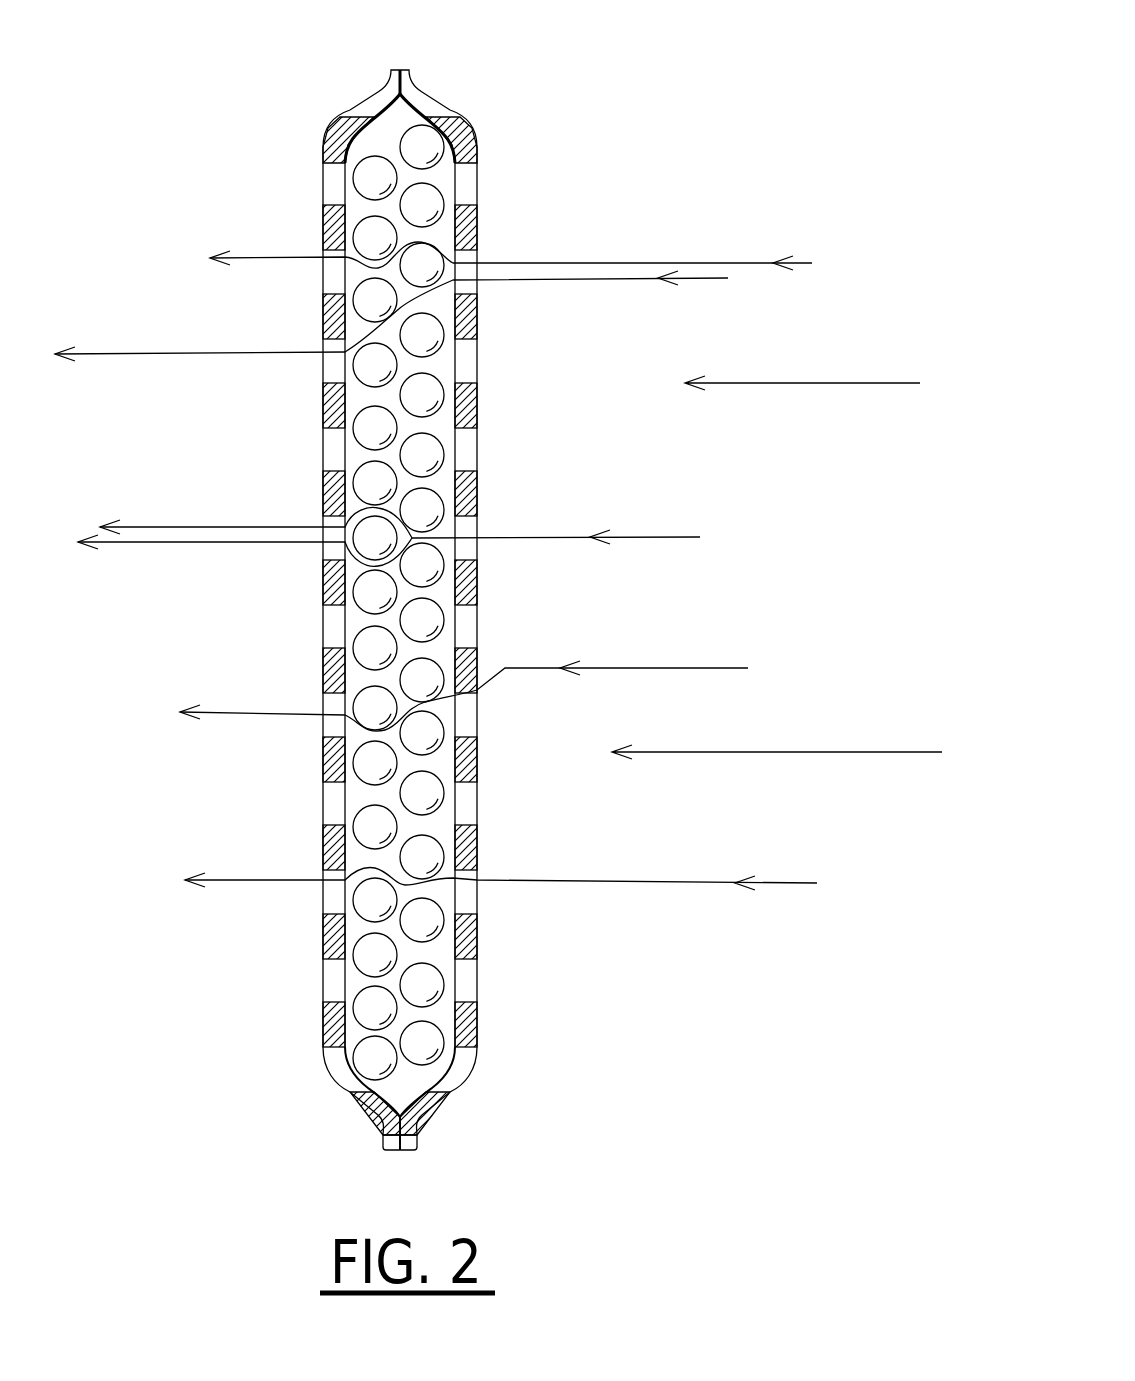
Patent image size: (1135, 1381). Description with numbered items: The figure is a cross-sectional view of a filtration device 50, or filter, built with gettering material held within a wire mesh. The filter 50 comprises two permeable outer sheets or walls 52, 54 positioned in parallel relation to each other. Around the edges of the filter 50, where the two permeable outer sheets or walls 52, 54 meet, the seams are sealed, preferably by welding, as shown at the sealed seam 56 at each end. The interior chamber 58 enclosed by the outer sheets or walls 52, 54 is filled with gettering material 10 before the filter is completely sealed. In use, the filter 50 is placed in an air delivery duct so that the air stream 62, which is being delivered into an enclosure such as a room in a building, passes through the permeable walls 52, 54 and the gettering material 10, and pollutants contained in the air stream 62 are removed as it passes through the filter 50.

The filtration device 50 is at (513, 80).
The permeable outer sheet 52 is at (478, 195).
The permeable outer sheet 54 is at (323, 190).
The sealed seam 56 is at (397, 68).
The interior chamber 58 is at (438, 427).
The gettering material 10 is at (446, 614).
The air stream 62 is at (192, 354).